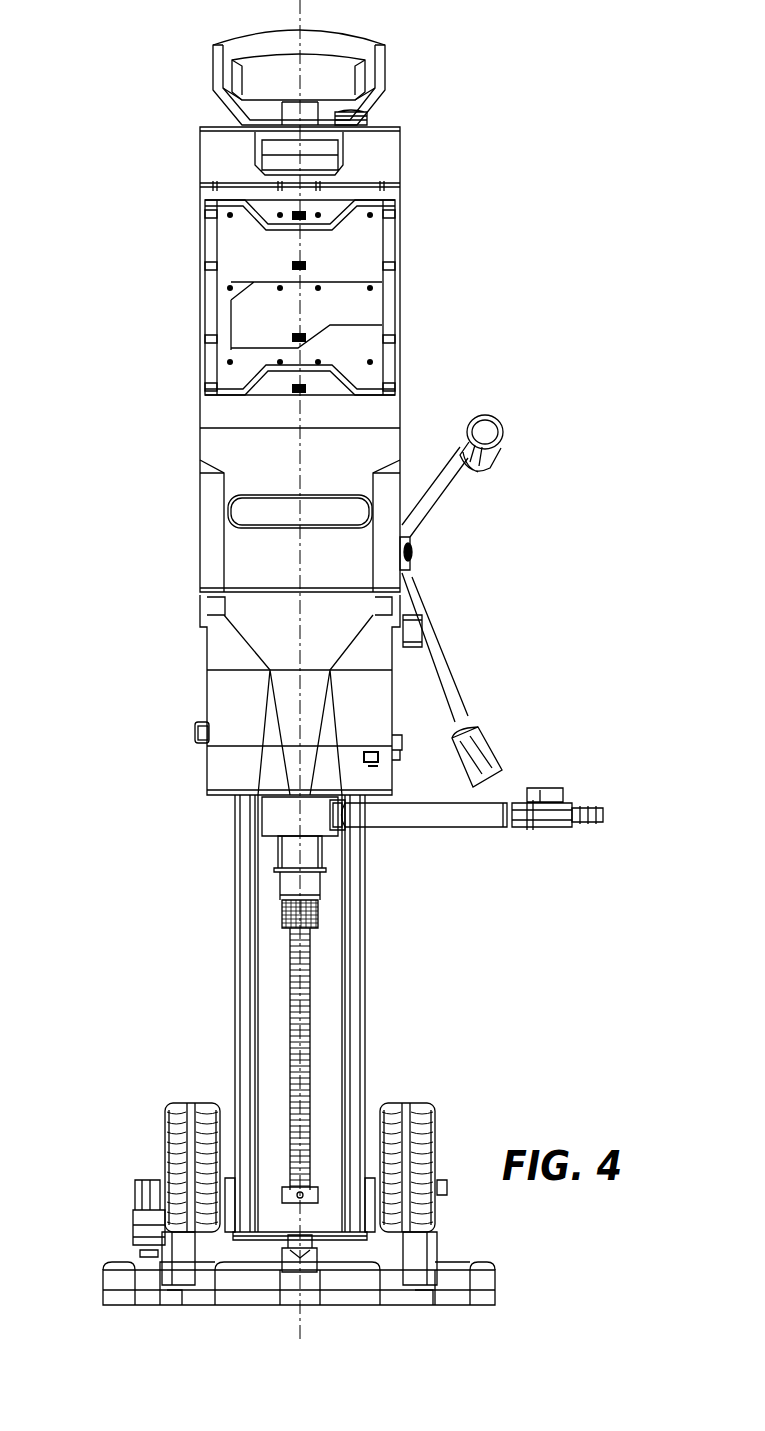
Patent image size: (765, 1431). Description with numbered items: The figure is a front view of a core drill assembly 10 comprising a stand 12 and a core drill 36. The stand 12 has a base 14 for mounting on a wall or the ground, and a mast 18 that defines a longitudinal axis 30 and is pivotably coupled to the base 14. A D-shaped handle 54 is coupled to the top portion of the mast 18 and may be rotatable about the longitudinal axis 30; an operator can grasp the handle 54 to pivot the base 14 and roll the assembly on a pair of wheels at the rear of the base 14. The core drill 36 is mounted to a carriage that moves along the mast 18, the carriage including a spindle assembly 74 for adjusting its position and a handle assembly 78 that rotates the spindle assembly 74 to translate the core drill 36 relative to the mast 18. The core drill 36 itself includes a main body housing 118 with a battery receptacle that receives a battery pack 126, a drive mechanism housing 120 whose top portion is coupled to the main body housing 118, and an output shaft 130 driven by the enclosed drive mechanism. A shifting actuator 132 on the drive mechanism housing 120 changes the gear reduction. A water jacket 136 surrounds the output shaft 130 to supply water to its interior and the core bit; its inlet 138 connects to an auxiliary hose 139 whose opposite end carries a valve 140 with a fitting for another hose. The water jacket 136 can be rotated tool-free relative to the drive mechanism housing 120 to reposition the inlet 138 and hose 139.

The core drill assembly 10 is at (100, 238).
The stand 12 is at (398, 945).
The base 14 is at (165, 1248).
The mast 18 is at (245, 953).
The longitudinal axis 30 is at (345, 78).
The core drill 36 is at (210, 485).
The handle 54 is at (225, 73).
The spindle assembly 74 is at (410, 560).
The handle assembly 78 is at (487, 427).
The main body housing 118 is at (212, 565).
The drive mechanism housing 120 is at (225, 650).
The battery pack 126 is at (245, 185).
The output shaft 130 is at (290, 850).
The shifting actuator 132 is at (195, 735).
The water jacket 136 is at (330, 836).
The inlet 138 is at (300, 808).
The auxiliary hose 139 is at (455, 820).
The valve 140 is at (562, 824).